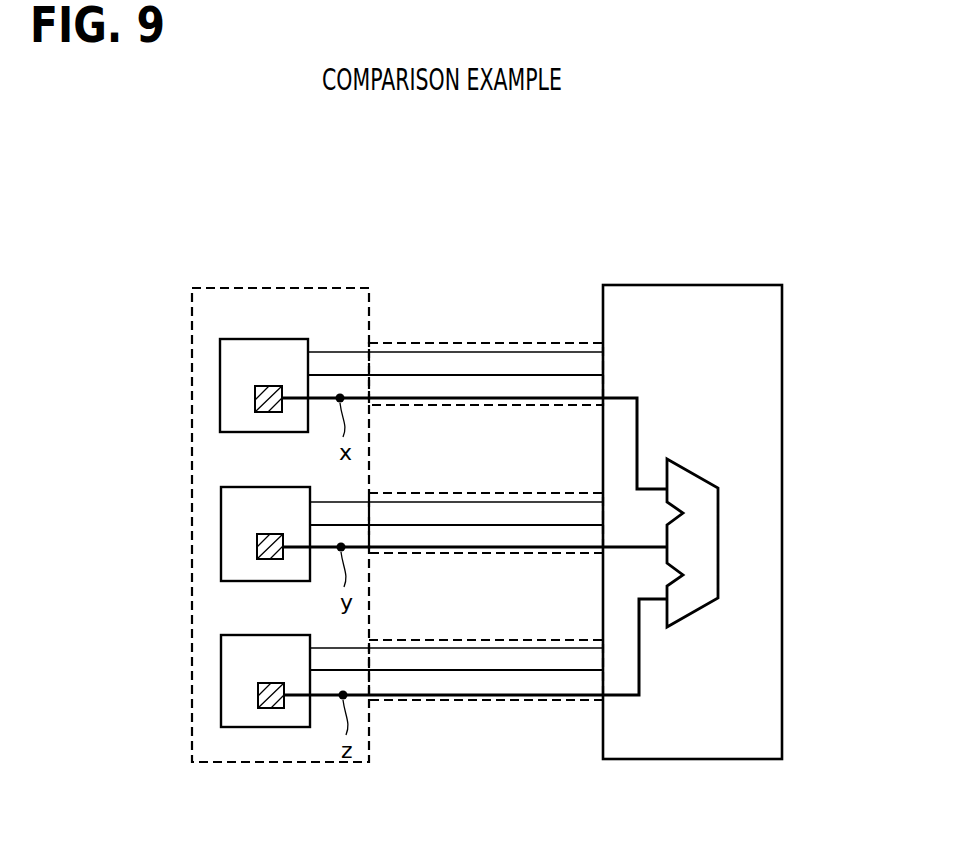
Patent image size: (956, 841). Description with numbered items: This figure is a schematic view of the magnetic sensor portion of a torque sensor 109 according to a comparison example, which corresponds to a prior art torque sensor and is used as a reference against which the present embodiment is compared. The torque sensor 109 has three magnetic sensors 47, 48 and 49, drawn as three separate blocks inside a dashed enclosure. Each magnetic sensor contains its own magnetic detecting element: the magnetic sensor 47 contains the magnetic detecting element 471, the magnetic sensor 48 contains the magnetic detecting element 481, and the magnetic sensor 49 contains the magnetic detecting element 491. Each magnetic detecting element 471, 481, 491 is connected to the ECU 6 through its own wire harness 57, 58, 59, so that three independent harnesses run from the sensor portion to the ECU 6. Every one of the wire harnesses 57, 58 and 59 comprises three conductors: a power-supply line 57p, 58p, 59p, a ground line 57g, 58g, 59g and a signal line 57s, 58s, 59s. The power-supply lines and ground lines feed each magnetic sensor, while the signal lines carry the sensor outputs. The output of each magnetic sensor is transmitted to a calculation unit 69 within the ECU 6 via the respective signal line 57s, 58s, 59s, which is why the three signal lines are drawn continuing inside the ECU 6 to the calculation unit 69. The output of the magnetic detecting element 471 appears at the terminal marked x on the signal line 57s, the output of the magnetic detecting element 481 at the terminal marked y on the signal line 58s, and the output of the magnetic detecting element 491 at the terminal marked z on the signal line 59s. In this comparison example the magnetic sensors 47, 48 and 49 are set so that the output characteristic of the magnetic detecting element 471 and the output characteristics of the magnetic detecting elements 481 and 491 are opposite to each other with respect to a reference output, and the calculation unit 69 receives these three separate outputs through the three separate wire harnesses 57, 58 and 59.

The torque sensor 109 is at (262, 288).
The magnetic sensor 47 is at (232, 358).
The magnetic detecting element 471 is at (255, 399).
The magnetic sensor 48 is at (233, 508).
The magnetic detecting element 481 is at (257, 547).
The magnetic sensor 49 is at (233, 655).
The magnetic detecting element 491 is at (258, 695).
The wire harness 57 is at (528, 343).
The power-supply line 57p is at (432, 350).
The ground line 57g is at (475, 375).
The signal line 57s is at (430, 398).
The wire harness 58 is at (528, 493).
The power-supply line 58p is at (432, 500).
The ground line 58g is at (475, 524).
The signal line 58s is at (430, 548).
The wire harness 59 is at (530, 640).
The power-supply line 59p is at (432, 647).
The ground line 59g is at (475, 670).
The signal line 59s is at (430, 696).
The ECU 6 is at (650, 285).
The calculation unit 69 is at (707, 478).